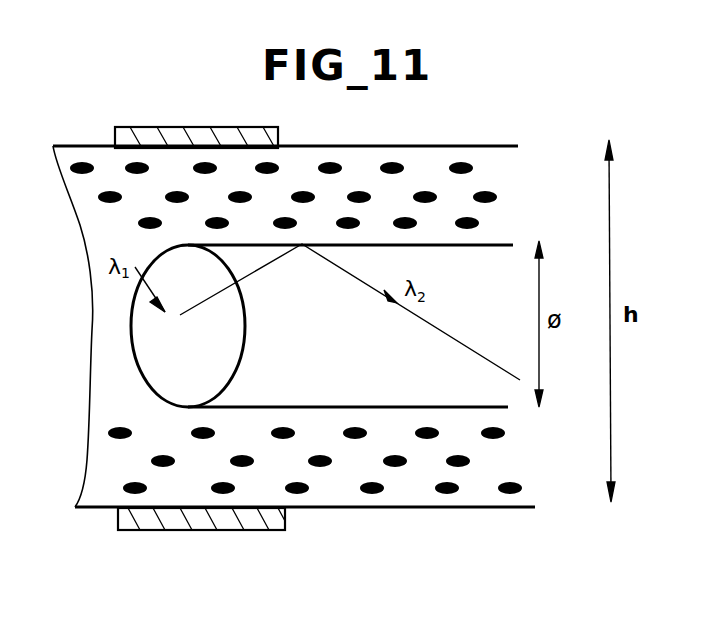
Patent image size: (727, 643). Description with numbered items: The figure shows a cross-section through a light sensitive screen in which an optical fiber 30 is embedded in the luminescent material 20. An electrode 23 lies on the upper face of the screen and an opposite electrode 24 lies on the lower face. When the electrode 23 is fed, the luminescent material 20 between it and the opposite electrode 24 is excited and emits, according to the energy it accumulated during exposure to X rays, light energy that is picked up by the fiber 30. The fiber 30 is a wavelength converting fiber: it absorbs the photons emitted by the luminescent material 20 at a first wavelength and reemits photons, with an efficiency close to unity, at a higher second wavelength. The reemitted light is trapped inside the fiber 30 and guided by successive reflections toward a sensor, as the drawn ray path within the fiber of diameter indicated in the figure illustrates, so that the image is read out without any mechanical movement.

The luminescent material 20 is at (410, 485).
The electrode 23 is at (199, 135).
The electrode 24 is at (285, 515).
The optical fiber 30 is at (404, 383).